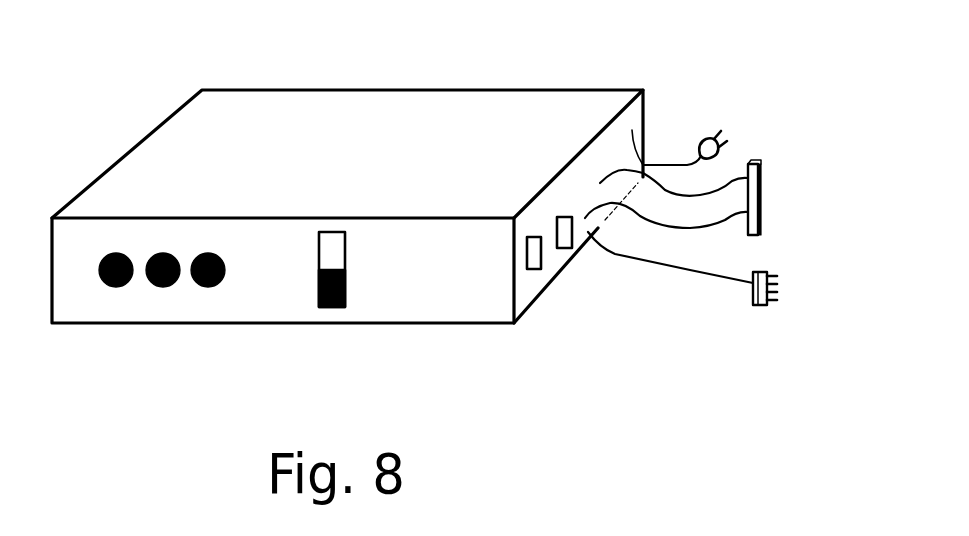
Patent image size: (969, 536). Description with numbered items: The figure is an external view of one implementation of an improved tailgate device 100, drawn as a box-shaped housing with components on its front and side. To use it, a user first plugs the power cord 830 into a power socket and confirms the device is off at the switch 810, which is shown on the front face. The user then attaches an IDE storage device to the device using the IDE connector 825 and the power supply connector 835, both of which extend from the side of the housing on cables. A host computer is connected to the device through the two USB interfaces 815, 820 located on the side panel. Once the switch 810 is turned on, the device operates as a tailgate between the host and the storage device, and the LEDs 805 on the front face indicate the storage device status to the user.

The device / system housing 100 is at (108, 26).
The LEDs 805 is at (164, 301).
The switch 810 is at (333, 307).
The USB interface 815 is at (542, 272).
The USB interface 820 is at (573, 250).
The IDE connector 825 is at (772, 217).
The power cord 830 is at (705, 139).
The power supply connector 835 is at (777, 287).